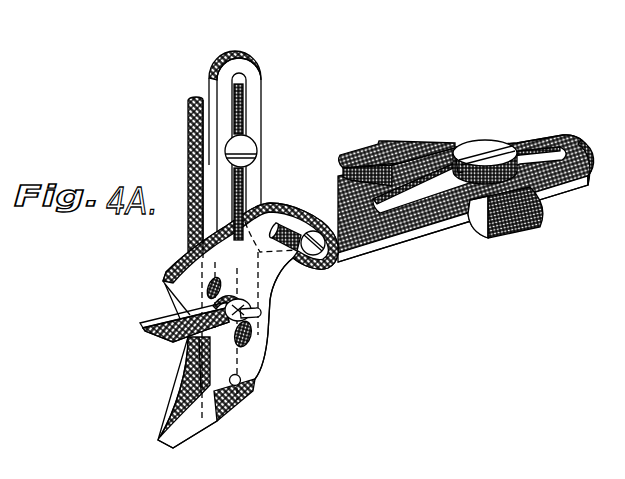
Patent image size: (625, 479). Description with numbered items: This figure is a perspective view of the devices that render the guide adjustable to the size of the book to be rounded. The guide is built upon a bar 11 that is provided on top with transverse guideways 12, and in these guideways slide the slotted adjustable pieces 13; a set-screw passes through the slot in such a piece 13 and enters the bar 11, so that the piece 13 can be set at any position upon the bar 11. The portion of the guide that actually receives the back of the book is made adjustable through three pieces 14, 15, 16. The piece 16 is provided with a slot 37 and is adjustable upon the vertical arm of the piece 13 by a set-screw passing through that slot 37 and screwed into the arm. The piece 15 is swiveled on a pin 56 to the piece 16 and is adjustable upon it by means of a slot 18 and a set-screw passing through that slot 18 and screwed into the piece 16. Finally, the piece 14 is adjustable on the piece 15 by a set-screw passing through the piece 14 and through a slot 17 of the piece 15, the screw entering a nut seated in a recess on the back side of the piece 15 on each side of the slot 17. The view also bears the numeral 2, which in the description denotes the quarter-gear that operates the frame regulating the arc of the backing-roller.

The quarter-gear 2 is at (238, 73).
The bar 11 is at (397, 156).
The transverse guideway 12 is at (458, 226).
The slotted adjustable piece 13 is at (380, 156).
The piece 14 is at (184, 322).
The piece 15 is at (229, 262).
The piece 16 is at (214, 179).
The slot 17 is at (274, 337).
The slot 18 is at (283, 218).
The slot 37 is at (250, 113).
The pin 56 is at (242, 380).